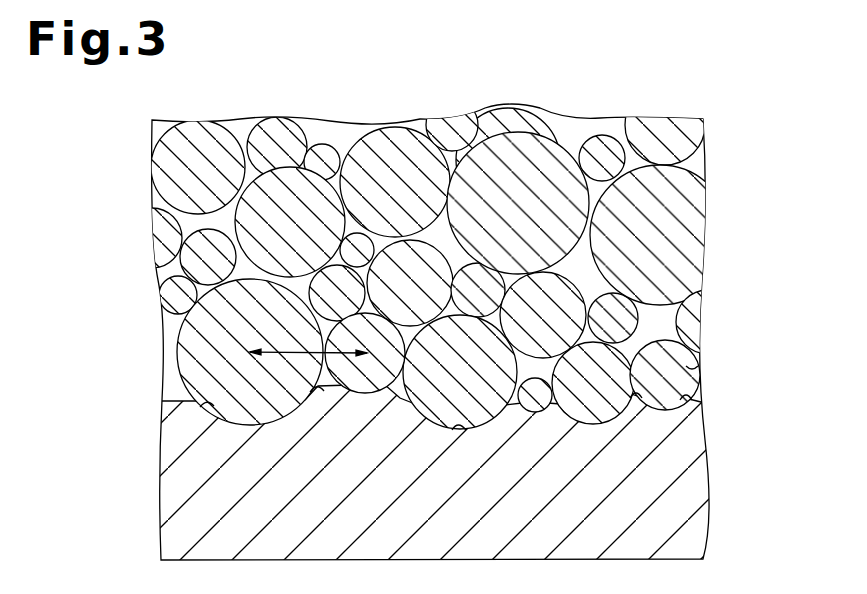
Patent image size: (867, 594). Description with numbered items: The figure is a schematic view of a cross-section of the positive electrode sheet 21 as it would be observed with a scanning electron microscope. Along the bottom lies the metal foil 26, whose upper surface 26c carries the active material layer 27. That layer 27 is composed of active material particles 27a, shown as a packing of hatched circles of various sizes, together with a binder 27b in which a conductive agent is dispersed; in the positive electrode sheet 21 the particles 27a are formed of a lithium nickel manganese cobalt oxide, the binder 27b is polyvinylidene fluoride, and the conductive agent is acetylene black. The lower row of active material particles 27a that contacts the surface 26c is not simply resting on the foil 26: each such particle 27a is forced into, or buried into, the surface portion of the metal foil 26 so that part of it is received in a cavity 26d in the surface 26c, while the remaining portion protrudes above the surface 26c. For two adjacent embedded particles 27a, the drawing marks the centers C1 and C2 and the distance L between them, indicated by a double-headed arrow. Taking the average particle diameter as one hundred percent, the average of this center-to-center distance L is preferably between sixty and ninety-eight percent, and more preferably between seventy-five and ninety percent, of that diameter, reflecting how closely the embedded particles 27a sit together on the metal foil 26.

The positive electrode sheet 21 is at (756, 152).
The metal foil 26 is at (419, 480).
The surface of the metal foil 26c is at (182, 401).
The cavities 26d is at (205, 405).
The active material layer 27 is at (436, 274).
The active material particles 27a is at (511, 163).
The binder 27b is at (352, 112).
The center of active material particle C1 is at (250, 357).
The center of adjacent active material particle C2 is at (355, 394).
The distance between centers L is at (327, 380).